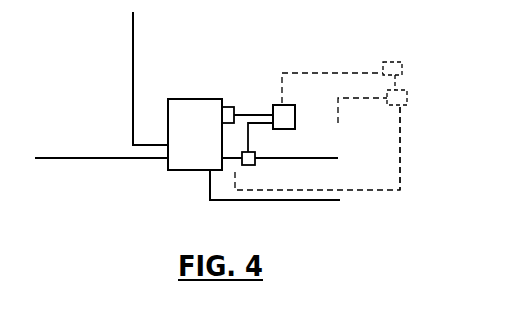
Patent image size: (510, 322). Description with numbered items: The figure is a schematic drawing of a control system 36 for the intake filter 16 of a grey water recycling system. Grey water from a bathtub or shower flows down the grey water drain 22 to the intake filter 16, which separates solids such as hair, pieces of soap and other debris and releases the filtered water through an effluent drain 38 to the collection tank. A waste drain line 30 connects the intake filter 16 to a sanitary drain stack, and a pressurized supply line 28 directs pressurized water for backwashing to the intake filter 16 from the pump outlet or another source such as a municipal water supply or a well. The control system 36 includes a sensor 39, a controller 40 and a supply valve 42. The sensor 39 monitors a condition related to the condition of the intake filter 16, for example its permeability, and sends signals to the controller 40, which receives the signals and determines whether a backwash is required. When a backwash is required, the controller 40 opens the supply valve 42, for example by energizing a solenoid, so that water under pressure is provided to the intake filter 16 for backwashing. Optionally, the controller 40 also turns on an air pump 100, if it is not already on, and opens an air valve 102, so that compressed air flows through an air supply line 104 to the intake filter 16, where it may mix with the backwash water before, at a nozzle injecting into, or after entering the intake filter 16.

The intake filter 16 is at (178, 99).
The grey water drain 22 is at (133, 55).
The pressurized supply line 28 is at (317, 157).
The waste drain line 30 is at (68, 157).
The control system 36 is at (312, 68).
The effluent drain 38 is at (252, 202).
The sensor 39 is at (225, 106).
The controller 40 is at (296, 120).
The supply valve 42 is at (250, 165).
The air pump 100 is at (403, 68).
The air valve 102 is at (407, 98).
The air supply line 104 is at (402, 148).